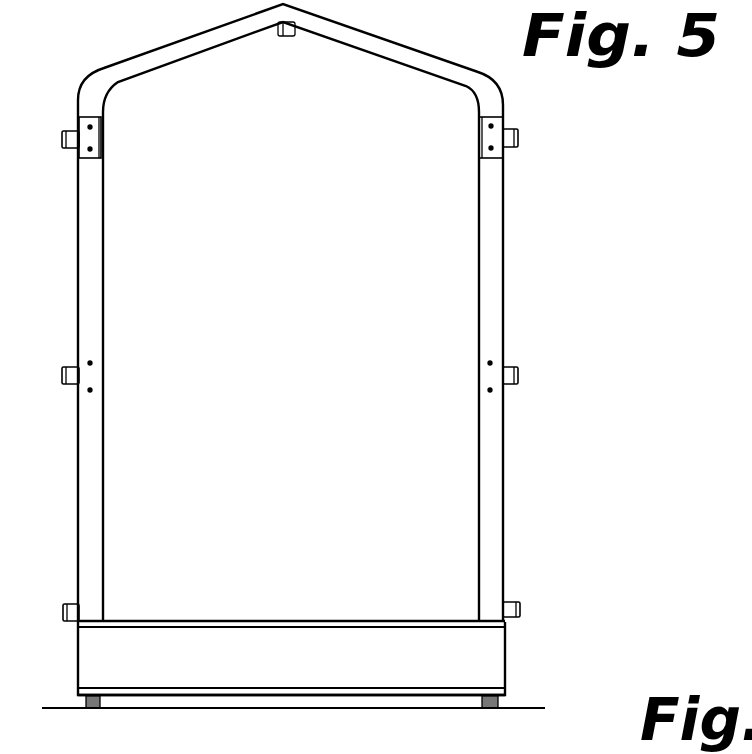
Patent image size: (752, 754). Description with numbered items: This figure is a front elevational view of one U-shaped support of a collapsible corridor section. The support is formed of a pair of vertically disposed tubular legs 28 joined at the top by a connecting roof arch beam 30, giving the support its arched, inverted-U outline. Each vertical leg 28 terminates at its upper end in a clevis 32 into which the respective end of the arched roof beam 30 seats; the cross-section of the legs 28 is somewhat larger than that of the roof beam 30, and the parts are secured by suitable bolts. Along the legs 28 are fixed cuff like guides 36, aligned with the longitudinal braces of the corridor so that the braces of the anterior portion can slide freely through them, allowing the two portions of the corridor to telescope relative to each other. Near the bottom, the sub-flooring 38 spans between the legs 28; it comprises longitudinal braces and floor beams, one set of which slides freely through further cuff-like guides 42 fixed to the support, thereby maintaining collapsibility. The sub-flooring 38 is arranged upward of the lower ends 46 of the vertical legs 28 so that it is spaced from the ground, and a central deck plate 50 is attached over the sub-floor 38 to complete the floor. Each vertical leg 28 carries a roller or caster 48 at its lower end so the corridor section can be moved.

The vertically disposed tubular legs 28 is at (77, 251).
The connecting roof arch beam 30 is at (133, 66).
The clevis 32 is at (103, 146).
The cuff like guide 36 is at (62, 137).
The sub-flooring 38 is at (292, 659).
The cuff-like guides 42 is at (77, 641).
The lower ends of the vertical legs 46 is at (513, 681).
The roller or caster 48 is at (102, 700).
The central deck plate 50 is at (173, 622).